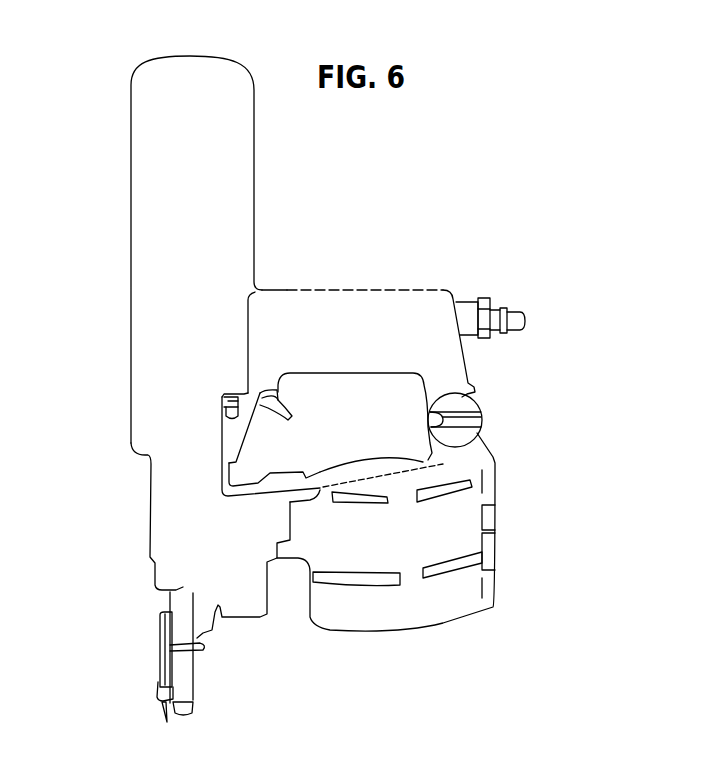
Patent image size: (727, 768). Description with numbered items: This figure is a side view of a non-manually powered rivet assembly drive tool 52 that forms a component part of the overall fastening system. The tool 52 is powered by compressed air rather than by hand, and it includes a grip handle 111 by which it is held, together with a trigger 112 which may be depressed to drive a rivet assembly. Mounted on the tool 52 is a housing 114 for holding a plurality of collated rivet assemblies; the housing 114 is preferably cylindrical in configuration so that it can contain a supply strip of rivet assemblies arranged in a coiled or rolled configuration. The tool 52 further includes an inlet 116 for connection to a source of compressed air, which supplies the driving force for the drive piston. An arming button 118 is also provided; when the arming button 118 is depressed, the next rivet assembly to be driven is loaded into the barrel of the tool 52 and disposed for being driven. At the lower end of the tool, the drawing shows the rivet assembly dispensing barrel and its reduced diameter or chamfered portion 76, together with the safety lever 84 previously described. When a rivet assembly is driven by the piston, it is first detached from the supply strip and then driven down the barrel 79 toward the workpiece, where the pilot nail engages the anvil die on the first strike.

The rivet assembly drive tool 52 is at (435, 214).
The grip handle 111 is at (315, 300).
The inlet 116 is at (517, 308).
The trigger 112 is at (277, 395).
The arming button 118 is at (228, 427).
The housing 114 is at (443, 515).
The safety lever 84 is at (158, 657).
The barrel 79 is at (197, 663).
The reduced diameter or chamfered portion 76 is at (193, 710).